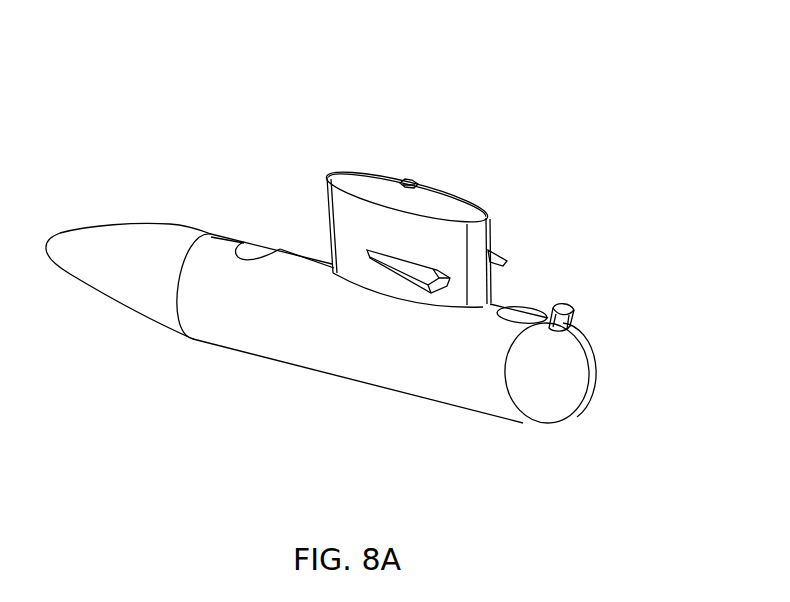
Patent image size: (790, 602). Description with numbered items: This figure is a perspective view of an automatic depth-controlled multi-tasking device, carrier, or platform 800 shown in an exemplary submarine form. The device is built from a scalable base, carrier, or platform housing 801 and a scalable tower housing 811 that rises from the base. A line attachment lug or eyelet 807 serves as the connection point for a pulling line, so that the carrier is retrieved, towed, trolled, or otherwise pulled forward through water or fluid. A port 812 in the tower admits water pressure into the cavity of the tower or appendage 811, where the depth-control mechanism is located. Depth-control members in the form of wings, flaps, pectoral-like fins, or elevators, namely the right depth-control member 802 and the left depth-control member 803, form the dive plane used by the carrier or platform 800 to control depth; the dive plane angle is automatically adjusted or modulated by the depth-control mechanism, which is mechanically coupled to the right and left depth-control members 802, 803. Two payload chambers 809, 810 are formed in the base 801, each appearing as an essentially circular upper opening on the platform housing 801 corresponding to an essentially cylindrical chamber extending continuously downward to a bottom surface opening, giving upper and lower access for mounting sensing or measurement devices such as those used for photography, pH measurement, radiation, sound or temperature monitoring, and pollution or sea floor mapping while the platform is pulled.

The automatic depth-controlled multi-tasking device, carrier, or platform 800 is at (155, 125).
The platform housing 801 is at (283, 333).
The right depth-control member 802 is at (410, 253).
The left depth-control member 803 is at (497, 253).
The line attachment lug or eyelet 807 is at (573, 308).
The payload chamber 809 is at (258, 240).
The payload chamber 810 is at (525, 306).
The tower housing 811 is at (363, 187).
The port 812 is at (415, 185).